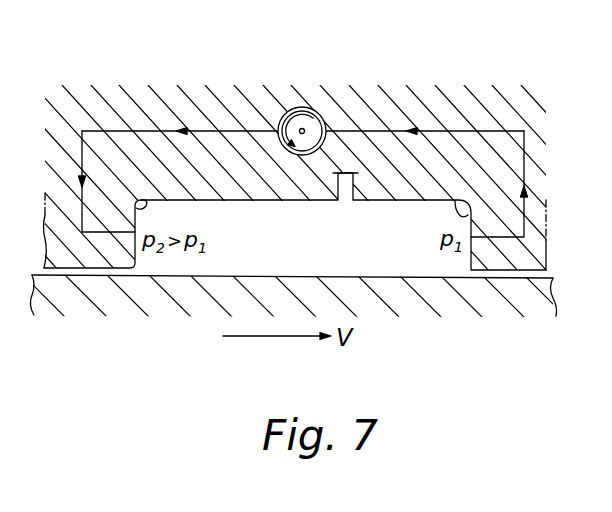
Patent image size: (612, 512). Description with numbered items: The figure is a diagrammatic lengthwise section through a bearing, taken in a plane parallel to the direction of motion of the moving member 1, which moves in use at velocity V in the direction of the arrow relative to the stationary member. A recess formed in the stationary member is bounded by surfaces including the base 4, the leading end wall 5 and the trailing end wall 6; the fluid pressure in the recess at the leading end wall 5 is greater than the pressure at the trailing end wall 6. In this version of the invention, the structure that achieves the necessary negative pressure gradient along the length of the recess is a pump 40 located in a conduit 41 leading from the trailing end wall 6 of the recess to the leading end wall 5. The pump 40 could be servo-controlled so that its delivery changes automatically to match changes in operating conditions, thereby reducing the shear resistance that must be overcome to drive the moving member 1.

The moving member 1 is at (379, 270).
The base 4 is at (300, 201).
The leading end wall 5 is at (143, 198).
The trailing end wall 6 is at (455, 201).
The pump 40 is at (295, 107).
The conduit 41 is at (427, 131).